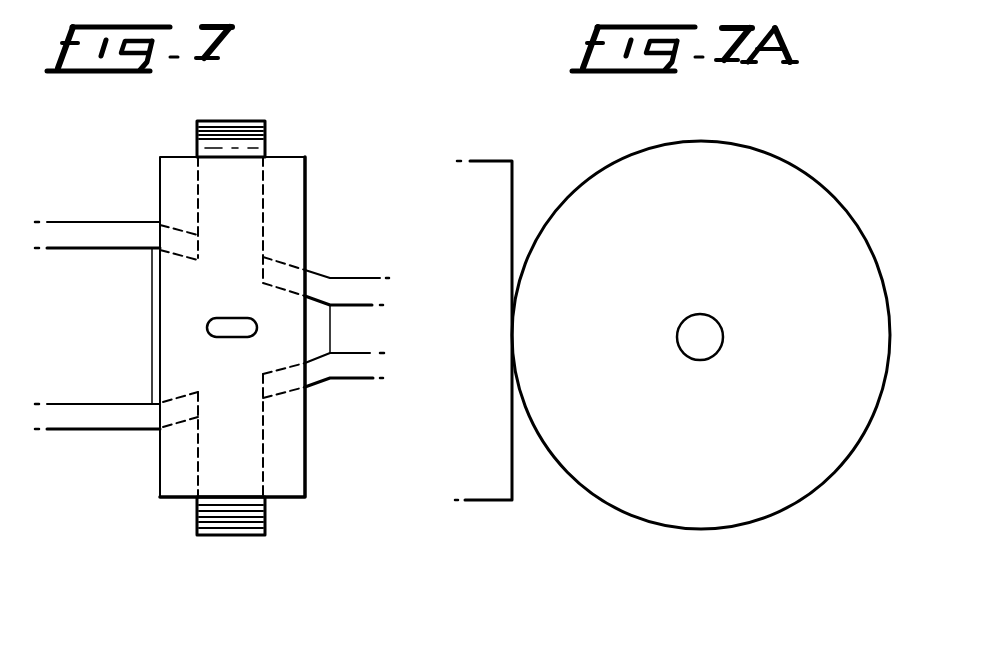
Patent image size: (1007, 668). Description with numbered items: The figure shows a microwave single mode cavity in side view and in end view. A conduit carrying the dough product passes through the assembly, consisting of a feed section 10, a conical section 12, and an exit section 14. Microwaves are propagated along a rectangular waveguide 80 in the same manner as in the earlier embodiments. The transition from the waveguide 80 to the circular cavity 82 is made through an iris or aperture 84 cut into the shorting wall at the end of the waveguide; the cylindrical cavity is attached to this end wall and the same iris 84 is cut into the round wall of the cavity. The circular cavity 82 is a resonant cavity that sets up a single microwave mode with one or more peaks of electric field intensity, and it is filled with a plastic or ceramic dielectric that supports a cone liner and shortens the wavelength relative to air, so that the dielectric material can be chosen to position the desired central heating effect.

In FIG. 7, the feed section 10 is at (68, 214).
In FIG. 7, the conical section 12 is at (315, 248).
In FIG. 7, the exit section 14 is at (362, 272).
In FIG. 7A, the exit section 14 is at (715, 372).
In FIG. 7, the rectangular waveguide 80 is at (278, 466).
In FIG. 7A, the rectangular waveguide 80 is at (492, 462).
In FIG. 7, the circular cavity 82 is at (257, 143).
In FIG. 7A, the circular cavity 82 is at (798, 208).
In FIG. 7, the iris 84 is at (257, 330).